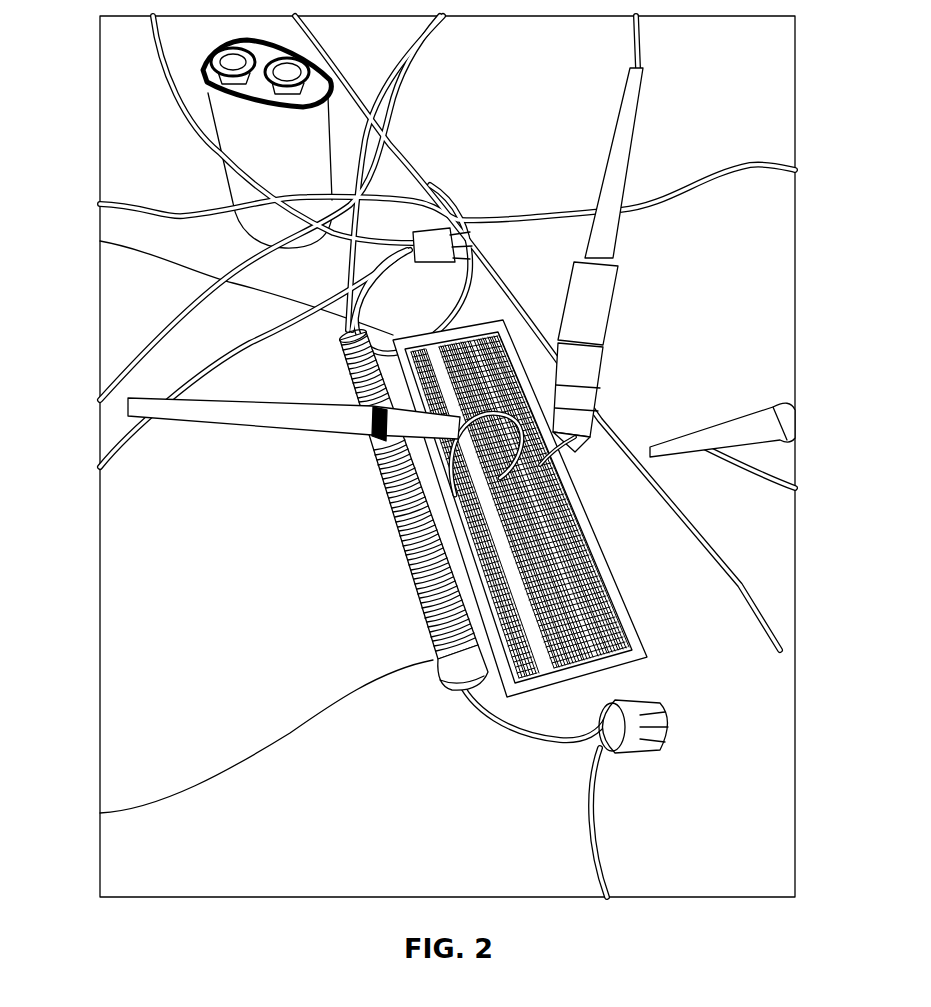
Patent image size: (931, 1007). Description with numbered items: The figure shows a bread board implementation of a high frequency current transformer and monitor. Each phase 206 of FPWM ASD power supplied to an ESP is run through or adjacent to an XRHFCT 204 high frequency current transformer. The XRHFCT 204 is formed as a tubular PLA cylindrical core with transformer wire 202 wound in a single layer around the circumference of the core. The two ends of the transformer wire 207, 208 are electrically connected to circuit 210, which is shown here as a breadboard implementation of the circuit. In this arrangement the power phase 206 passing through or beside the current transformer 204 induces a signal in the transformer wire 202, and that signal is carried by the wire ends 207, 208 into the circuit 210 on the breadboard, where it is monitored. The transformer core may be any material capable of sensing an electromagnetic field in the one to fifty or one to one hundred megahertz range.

The transformer wire 202 is at (460, 457).
The XRHFCT high frequency current transformer 204 is at (100, 813).
The phase 206 is at (447, 693).
The end of the transformer wire 207 is at (413, 590).
The end of the transformer wire 208 is at (348, 383).
The circuit 210 is at (607, 567).